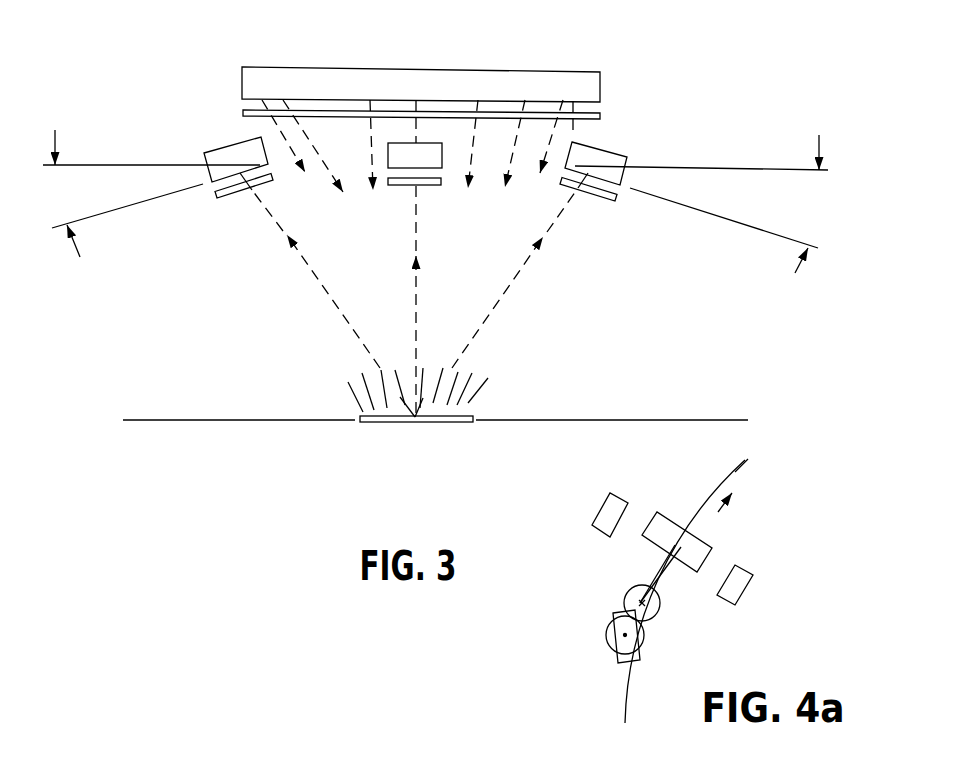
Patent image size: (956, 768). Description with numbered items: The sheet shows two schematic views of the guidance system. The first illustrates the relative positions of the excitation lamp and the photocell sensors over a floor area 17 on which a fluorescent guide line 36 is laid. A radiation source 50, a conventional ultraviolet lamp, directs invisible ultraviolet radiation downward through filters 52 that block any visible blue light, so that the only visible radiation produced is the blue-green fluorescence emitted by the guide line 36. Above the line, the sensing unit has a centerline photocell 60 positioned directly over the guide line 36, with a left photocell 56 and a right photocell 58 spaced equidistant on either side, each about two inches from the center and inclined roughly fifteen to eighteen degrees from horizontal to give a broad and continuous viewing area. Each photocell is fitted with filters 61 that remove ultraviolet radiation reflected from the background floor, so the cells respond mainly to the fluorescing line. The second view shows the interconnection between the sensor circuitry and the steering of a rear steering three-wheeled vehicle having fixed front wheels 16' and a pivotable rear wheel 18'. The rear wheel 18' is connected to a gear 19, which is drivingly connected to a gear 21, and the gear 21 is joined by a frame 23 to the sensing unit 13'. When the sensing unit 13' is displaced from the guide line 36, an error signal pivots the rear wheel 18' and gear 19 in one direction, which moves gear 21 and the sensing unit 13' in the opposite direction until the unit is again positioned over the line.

In FIG. 3, the radiation source 50 is at (567, 70).
In FIG. 3, the filters 52 is at (598, 113).
In FIG. 3, the left photocell 56 is at (222, 155).
In FIG. 3, the right photocell 58 is at (610, 158).
In FIG. 3, the centerline photocell 60 is at (435, 162).
In FIG. 3, the filters 61 is at (230, 195).
In FIG. 3, the guide line 36 is at (472, 415).
In FIG. 4a, the guide line 36 is at (742, 468).
In FIG. 3, the floor area 17 is at (657, 420).
In FIG. 4a, the front wheels 16' is at (672, 541).
In FIG. 4a, the sensing unit 13' is at (701, 542).
In FIG. 4a, the frame 23 is at (662, 570).
In FIG. 4a, the gear 21 is at (660, 607).
In FIG. 4a, the gear 19 is at (645, 639).
In FIG. 4a, the rear wheel 18' is at (600, 647).